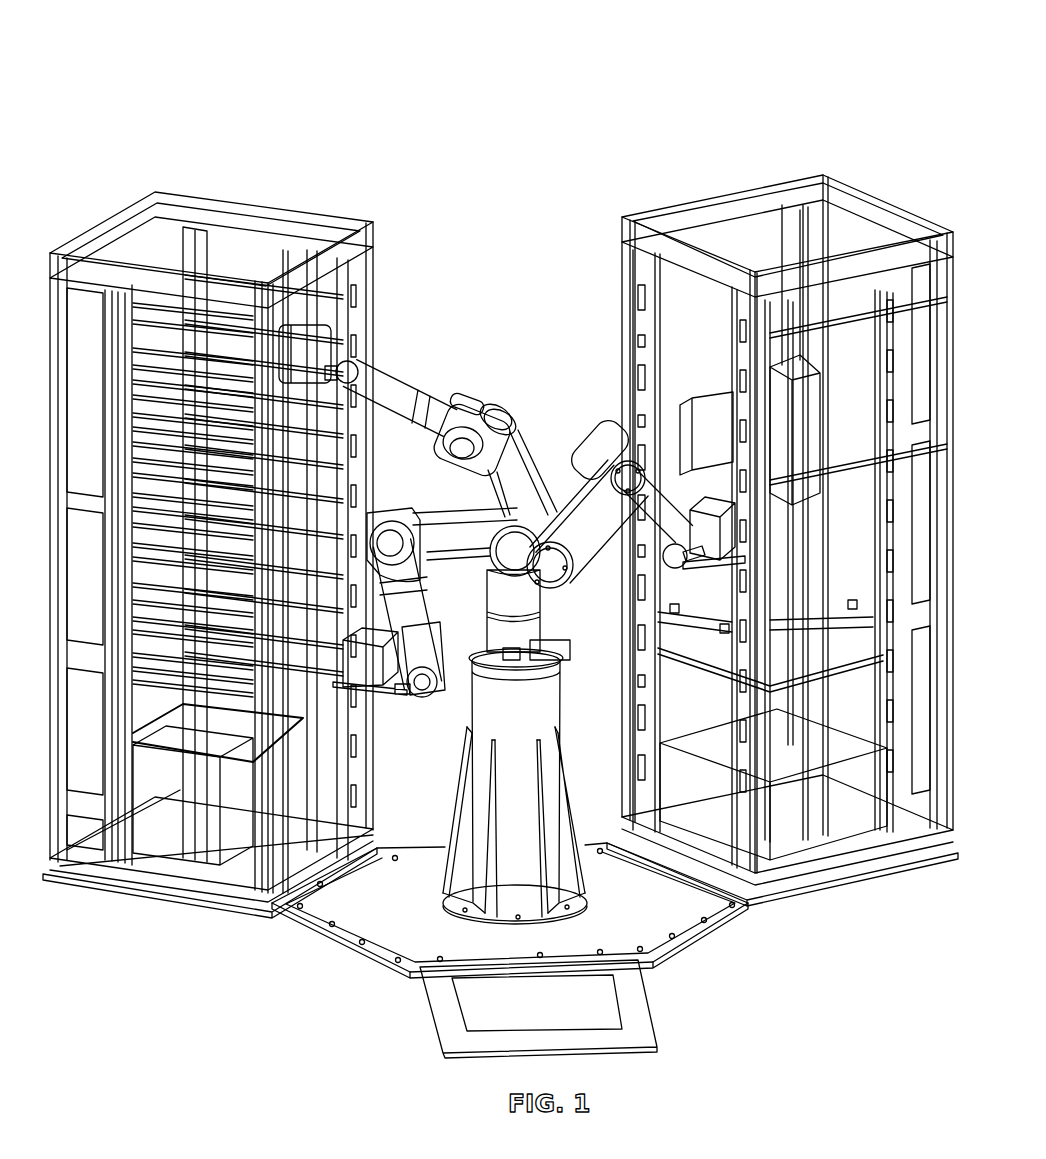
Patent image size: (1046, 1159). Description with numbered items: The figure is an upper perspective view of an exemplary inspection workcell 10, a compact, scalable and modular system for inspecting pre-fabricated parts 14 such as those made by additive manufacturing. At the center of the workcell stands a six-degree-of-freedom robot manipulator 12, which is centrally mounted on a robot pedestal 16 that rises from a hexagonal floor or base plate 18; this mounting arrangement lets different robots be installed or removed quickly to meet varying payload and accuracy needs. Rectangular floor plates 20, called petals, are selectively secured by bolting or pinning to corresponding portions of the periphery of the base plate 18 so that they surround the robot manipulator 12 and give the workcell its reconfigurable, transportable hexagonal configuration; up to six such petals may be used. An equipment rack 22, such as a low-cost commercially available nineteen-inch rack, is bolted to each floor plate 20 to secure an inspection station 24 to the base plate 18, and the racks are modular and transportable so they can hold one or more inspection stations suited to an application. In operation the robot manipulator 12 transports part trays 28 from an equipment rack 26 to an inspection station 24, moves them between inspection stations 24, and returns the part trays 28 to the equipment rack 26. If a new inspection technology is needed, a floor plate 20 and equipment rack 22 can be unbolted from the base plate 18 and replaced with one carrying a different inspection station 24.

The inspection workcell 10 is at (664, 52).
The robot manipulator 12 is at (493, 362).
The pre-fabricated parts 14 is at (412, 596).
The robot pedestal 16 is at (458, 790).
The base plate 18 is at (655, 966).
The floor plate 20 is at (157, 898).
The equipment rack 22 is at (826, 150).
The inspection station 24 is at (594, 368).
The equipment rack 26 is at (304, 182).
The part tray 28 is at (383, 700).